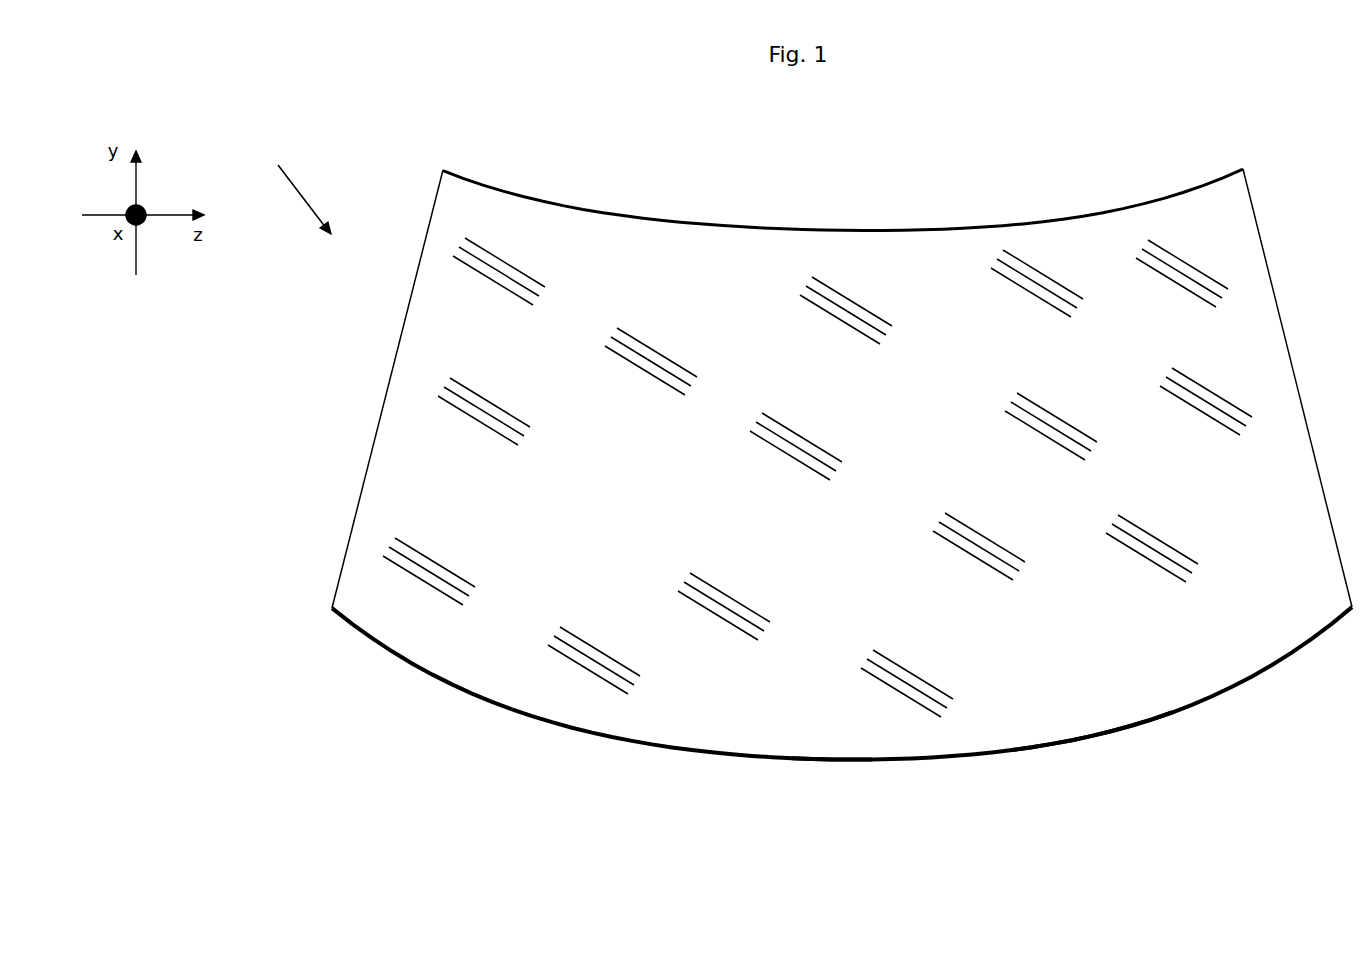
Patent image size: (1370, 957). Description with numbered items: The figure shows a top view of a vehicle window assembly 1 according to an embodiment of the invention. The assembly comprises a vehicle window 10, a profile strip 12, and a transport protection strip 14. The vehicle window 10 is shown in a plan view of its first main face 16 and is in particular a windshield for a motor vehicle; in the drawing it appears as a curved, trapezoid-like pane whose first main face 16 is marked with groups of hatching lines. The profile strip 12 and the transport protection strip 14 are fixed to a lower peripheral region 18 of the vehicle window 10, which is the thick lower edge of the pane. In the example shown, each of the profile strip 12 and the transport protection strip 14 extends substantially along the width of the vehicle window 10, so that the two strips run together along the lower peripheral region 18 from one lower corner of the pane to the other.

The vehicle window assembly 1 is at (296, 186).
The vehicle window 10 is at (732, 287).
The profile strip 12 is at (1047, 745).
The transport protection strip 14 is at (1115, 732).
The first main face 16 is at (812, 557).
The lower peripheral region 18 is at (837, 752).